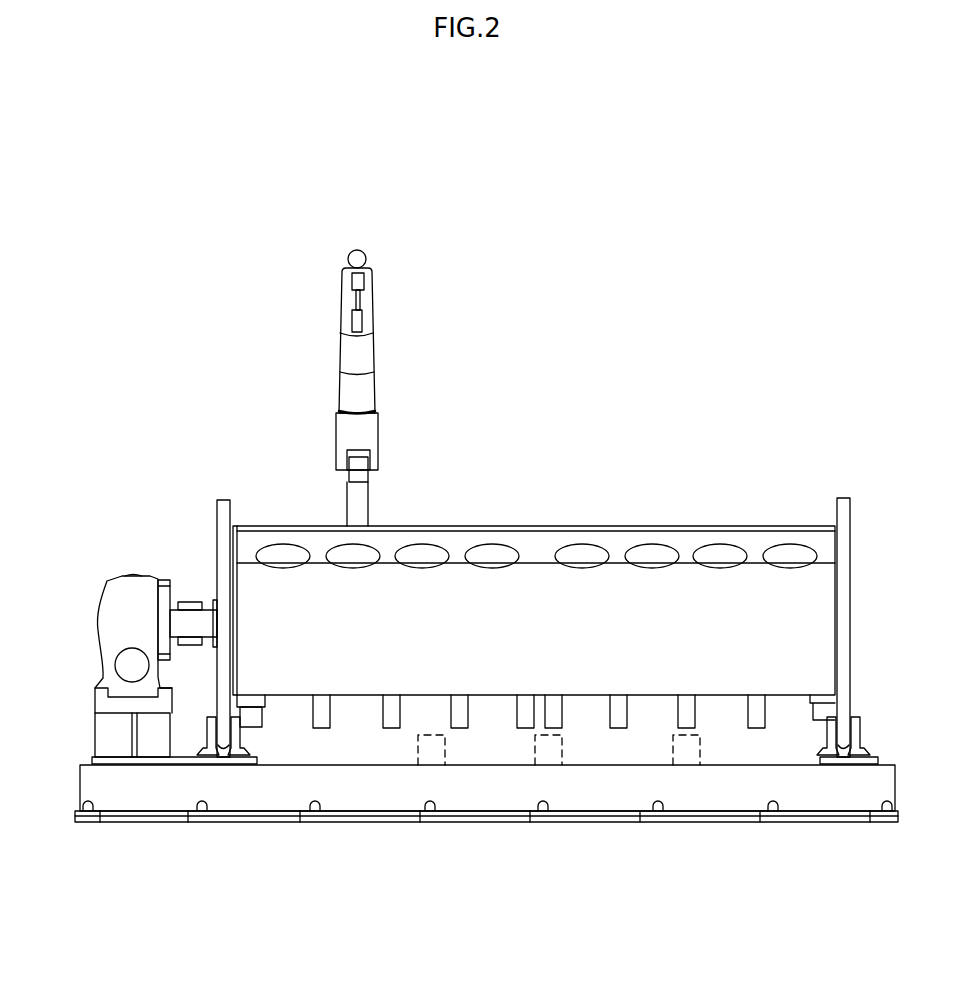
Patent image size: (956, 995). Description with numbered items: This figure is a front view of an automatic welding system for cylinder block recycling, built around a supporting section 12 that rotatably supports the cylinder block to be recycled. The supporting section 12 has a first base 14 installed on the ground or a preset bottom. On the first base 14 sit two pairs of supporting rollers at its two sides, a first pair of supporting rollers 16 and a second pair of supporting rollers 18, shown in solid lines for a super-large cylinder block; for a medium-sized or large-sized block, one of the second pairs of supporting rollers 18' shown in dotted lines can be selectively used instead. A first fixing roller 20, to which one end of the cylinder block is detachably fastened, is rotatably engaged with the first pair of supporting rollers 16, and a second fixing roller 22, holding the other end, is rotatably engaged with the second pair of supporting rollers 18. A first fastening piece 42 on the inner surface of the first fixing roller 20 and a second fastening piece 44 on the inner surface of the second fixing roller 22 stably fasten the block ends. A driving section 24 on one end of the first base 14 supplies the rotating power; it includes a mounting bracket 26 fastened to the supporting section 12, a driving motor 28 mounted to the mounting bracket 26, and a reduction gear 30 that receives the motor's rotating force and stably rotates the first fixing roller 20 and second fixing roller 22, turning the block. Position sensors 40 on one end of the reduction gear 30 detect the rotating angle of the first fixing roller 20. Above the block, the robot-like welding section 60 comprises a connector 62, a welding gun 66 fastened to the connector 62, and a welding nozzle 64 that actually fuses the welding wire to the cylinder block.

The supporting section 12 is at (418, 836).
The first base 14 is at (519, 790).
The first pair of supporting rollers 16 is at (224, 737).
The second pair of supporting rollers 18 is at (847, 818).
The second pairs of supporting rollers 18' is at (559, 825).
The first fixing roller 20 is at (223, 510).
The second fixing roller 22 is at (843, 510).
The driving section 24 is at (132, 562).
The mounting bracket 26 is at (110, 745).
The driving motor 28 is at (140, 674).
The reduction gear 30 is at (130, 598).
The position sensors 40 is at (178, 582).
The first fastening piece 42 is at (252, 707).
The second fastening piece 44 is at (818, 705).
The welding section 60 is at (323, 348).
The connector 62 is at (358, 465).
The welding nozzle 64 is at (357, 322).
The welding gun 66 is at (370, 348).